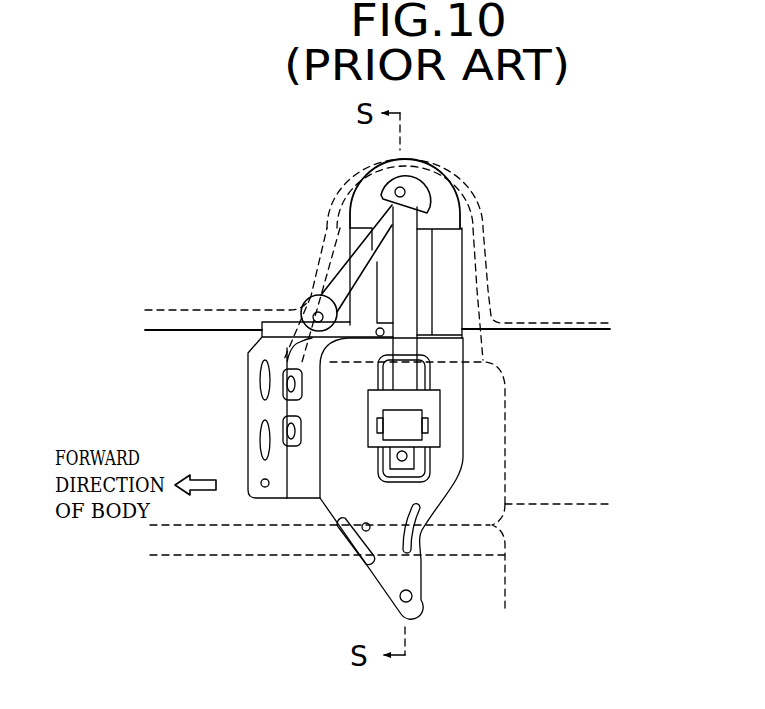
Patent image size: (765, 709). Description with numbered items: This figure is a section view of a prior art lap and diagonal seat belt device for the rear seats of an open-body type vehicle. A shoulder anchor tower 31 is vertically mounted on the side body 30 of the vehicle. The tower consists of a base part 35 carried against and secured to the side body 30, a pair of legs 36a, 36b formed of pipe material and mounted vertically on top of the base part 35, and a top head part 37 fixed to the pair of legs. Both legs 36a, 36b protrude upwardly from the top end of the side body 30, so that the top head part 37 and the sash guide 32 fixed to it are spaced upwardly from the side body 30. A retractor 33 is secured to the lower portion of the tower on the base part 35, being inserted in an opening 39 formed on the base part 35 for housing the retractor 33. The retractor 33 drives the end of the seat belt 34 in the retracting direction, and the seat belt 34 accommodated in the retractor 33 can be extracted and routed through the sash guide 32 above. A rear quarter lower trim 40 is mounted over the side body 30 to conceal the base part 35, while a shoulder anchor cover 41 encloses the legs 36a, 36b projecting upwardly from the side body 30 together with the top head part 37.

The side body 30 is at (587, 341).
The shoulder anchor tower 31 is at (472, 249).
The sash guide 32 is at (420, 193).
The retractor 33 is at (417, 417).
The seat belt 34 is at (366, 256).
The base part 35 is at (454, 382).
The leg 36a is at (330, 284).
The leg 36b is at (447, 312).
The top head part 37 is at (427, 172).
The opening 39 is at (434, 442).
The rear quarter lower trim 40 is at (190, 310).
The shoulder anchor cover 41 is at (481, 204).